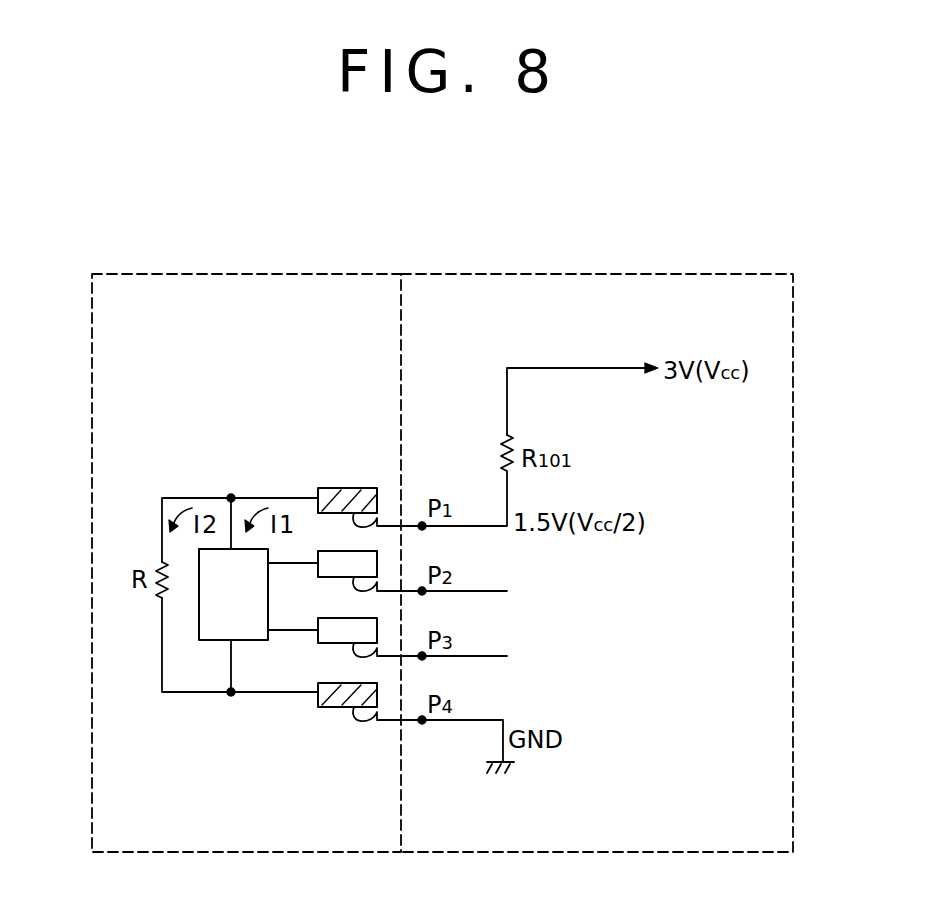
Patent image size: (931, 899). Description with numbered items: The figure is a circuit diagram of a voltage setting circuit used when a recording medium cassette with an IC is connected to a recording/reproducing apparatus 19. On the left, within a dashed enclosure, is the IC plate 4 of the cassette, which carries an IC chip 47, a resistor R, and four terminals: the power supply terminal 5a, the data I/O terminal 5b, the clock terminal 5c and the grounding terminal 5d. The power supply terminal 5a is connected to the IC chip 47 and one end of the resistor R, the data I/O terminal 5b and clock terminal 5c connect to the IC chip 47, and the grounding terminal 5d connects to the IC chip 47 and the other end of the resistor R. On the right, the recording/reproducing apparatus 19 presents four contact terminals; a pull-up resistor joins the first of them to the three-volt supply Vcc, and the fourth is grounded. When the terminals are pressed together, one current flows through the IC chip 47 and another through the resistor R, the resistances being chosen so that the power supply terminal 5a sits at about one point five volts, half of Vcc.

The IC plate 4 is at (306, 272).
The recording/reproducing apparatus 19 is at (553, 272).
The IC chip 47 is at (201, 630).
The power supply terminal 5a is at (350, 487).
The data I/O terminal 5b is at (323, 576).
The clock terminal 5c is at (323, 643).
The grounding terminal 5d is at (323, 708).